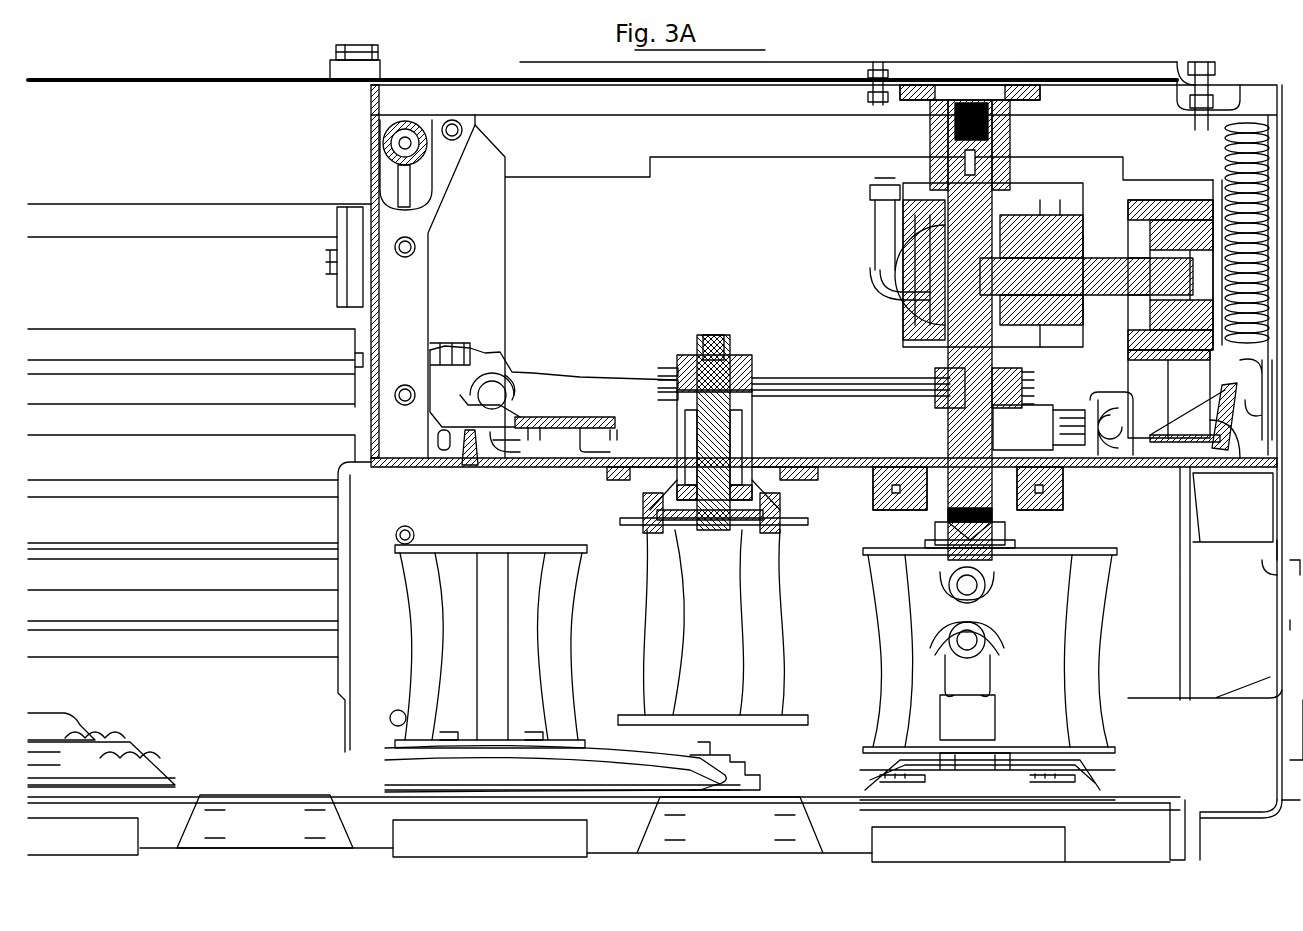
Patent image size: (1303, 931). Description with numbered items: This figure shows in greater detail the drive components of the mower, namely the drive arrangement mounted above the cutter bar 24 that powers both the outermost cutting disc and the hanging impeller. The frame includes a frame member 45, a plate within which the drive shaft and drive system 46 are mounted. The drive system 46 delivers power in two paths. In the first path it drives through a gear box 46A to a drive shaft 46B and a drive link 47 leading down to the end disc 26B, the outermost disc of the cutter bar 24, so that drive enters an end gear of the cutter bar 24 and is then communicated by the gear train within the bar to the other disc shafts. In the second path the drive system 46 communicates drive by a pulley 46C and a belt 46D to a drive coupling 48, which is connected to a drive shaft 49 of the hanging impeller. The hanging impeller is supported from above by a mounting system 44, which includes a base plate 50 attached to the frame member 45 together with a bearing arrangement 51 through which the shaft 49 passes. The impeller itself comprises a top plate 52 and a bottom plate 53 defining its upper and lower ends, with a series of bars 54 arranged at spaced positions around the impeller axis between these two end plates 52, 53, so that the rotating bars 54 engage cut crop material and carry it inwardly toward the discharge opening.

The cutter bar 24 is at (782, 760).
The outer disc 26B is at (1097, 786).
The mounting system 44 is at (750, 433).
The frame member 45 is at (862, 450).
The drive system 46 is at (824, 283).
The gear box 46A is at (853, 238).
The drive shaft 46B is at (1025, 372).
The pulley 46C is at (903, 343).
The belt 46D is at (783, 370).
The drive link 47 is at (1003, 600).
The drive coupling 48 is at (678, 420).
The drive shaft 49 is at (690, 433).
The base plate 50 is at (617, 487).
The bearing arrangement 51 is at (727, 527).
The top plate 52 is at (575, 560).
The bottom plate 53 is at (627, 707).
The bars 54 is at (763, 573).